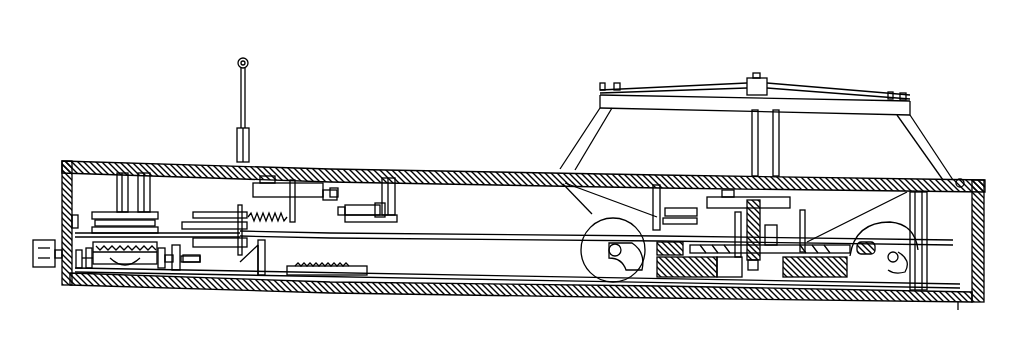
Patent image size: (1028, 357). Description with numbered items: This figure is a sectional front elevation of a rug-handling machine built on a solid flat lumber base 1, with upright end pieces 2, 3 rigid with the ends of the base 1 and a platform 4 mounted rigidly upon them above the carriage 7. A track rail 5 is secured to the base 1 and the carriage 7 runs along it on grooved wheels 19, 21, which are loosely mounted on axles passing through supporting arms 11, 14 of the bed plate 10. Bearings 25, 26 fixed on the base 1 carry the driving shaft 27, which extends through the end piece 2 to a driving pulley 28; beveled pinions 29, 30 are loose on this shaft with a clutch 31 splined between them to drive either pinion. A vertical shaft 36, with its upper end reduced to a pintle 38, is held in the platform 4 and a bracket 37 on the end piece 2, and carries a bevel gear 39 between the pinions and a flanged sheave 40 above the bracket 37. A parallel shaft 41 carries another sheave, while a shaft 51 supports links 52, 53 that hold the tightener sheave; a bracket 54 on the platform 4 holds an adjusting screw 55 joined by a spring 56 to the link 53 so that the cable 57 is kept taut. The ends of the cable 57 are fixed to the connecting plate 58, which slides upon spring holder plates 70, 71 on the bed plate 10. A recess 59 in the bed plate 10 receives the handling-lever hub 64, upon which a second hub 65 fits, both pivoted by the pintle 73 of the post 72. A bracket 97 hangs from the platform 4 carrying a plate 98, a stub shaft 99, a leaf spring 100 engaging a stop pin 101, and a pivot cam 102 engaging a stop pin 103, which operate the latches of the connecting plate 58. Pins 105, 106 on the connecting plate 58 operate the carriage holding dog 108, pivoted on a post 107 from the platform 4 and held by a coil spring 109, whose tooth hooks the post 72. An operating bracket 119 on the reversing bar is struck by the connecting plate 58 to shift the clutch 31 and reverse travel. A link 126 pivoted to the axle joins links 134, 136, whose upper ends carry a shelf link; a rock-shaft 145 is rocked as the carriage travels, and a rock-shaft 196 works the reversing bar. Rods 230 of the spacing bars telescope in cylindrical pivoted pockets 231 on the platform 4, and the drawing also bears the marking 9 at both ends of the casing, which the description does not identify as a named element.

The base 1 is at (357, 293).
The end piece 2 is at (62, 203).
The end piece 3 is at (985, 228).
The platform 4 is at (433, 170).
The track rail 5 is at (958, 308).
The carriage 7 is at (827, 280).
The casing end wall 9 is at (62, 172).
The bed plate 10 is at (668, 280).
The supporting arm 11 is at (640, 272).
The supporting arm 14 is at (243, 56).
The grooved wheel 19 is at (613, 250).
The grooved wheel 21 is at (884, 252).
The bearing 25 is at (79, 270).
The bearing 26 is at (175, 272).
The driving shaft 27 is at (190, 265).
The driving pulley 28 is at (42, 268).
The beveled pinion 29 is at (90, 270).
The beveled pinion 30 is at (160, 270).
The clutch 31 is at (122, 268).
The shaft 36 is at (120, 185).
The bracket 37 is at (72, 228).
The pintle 38 is at (122, 168).
The bevel gear 39 is at (156, 236).
The flanged sheave 40 is at (158, 215).
The shaft 41 is at (150, 190).
The shaft 51 is at (255, 275).
The link 52 is at (200, 258).
The link 53 is at (220, 212).
The bracket 54 is at (300, 183).
The adjusting screw 55 is at (294, 224).
The spring 56 is at (268, 224).
The cable 57 is at (478, 232).
The connecting plate 58 is at (865, 280).
The recess 59 is at (718, 280).
The handling-lever hub 64 is at (772, 280).
The handling-lever hub 65 is at (776, 236).
The sliding spring holder plate 70 is at (695, 280).
The spring-holder plate 71 is at (797, 280).
The post 72 is at (745, 226).
The pintle 73 is at (752, 272).
The bracket 97 is at (395, 200).
The plate 98 is at (397, 218).
The stub shaft 99 is at (342, 210).
The leaf spring 100 is at (370, 205).
The stop pin 101 is at (385, 224).
The pivot cam 102 is at (362, 265).
The stop pin 103 is at (697, 224).
The pin 105 is at (805, 216).
The pin 106 is at (747, 238).
The post 107 is at (790, 203).
The carriage holding dog 108 is at (718, 180).
The coil spring 109 is at (785, 178).
The operating bracket 119 is at (265, 258).
The link 126 is at (580, 198).
The link 134 is at (603, 140).
The link 136 is at (915, 145).
The rock-shaft 145 is at (752, 123).
The rock-shaft 196 is at (779, 138).
The rod 230 is at (246, 95).
The cylindrical pivoted pocket 231 is at (250, 145).